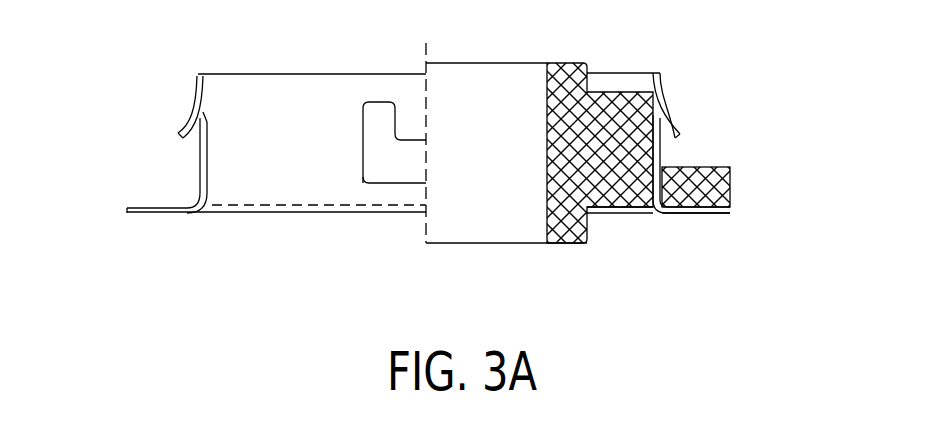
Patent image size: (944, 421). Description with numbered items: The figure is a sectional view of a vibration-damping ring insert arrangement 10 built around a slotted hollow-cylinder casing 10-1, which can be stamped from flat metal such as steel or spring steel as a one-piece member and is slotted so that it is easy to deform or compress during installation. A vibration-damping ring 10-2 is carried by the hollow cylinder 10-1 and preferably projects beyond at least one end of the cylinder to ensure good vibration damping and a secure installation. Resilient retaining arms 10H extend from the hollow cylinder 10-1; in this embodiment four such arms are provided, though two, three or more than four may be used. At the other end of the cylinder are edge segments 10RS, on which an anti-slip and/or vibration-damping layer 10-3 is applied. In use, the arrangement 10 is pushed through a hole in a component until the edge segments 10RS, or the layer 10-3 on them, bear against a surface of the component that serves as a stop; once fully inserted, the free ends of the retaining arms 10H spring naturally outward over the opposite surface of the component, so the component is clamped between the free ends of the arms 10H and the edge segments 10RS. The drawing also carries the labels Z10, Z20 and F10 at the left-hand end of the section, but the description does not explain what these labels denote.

The vibration-damping ring insert arrangement 10 is at (342, 73).
The slotted hollow-cylinder casing 10-1 is at (661, 151).
The vibration-damping ring 10-2 is at (562, 64).
The anti-slip and/or vibration-damping layer 10-3 is at (732, 188).
The resilient retaining arms 10H is at (664, 107).
The edge segments of the hollow cylinder 10RS is at (705, 215).
The bent tab Z10 is at (196, 96).
The bend portion Z20 is at (193, 207).
The flange F10 is at (158, 203).